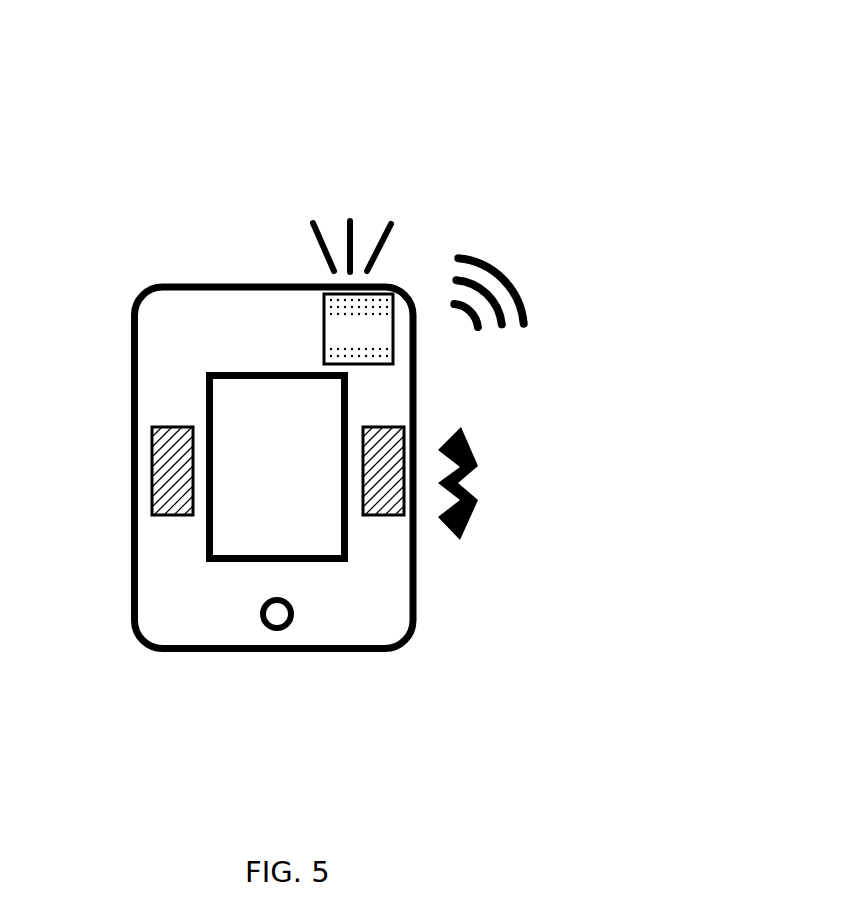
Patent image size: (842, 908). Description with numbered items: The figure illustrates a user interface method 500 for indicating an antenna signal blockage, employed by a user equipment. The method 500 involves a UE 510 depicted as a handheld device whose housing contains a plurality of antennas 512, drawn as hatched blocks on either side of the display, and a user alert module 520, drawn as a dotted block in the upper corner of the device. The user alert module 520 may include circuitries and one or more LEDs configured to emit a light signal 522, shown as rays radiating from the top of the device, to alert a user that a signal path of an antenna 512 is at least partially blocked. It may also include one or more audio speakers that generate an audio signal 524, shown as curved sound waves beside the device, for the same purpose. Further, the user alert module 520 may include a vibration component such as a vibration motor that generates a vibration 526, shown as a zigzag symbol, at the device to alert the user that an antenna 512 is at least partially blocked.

The user interface method 500 is at (604, 84).
The UE 510 is at (132, 453).
The antennas 512 is at (172, 471).
The user alert module 520 is at (358, 329).
The light signal 522 is at (357, 188).
The audio signal 524 is at (529, 253).
The vibration 526 is at (503, 463).